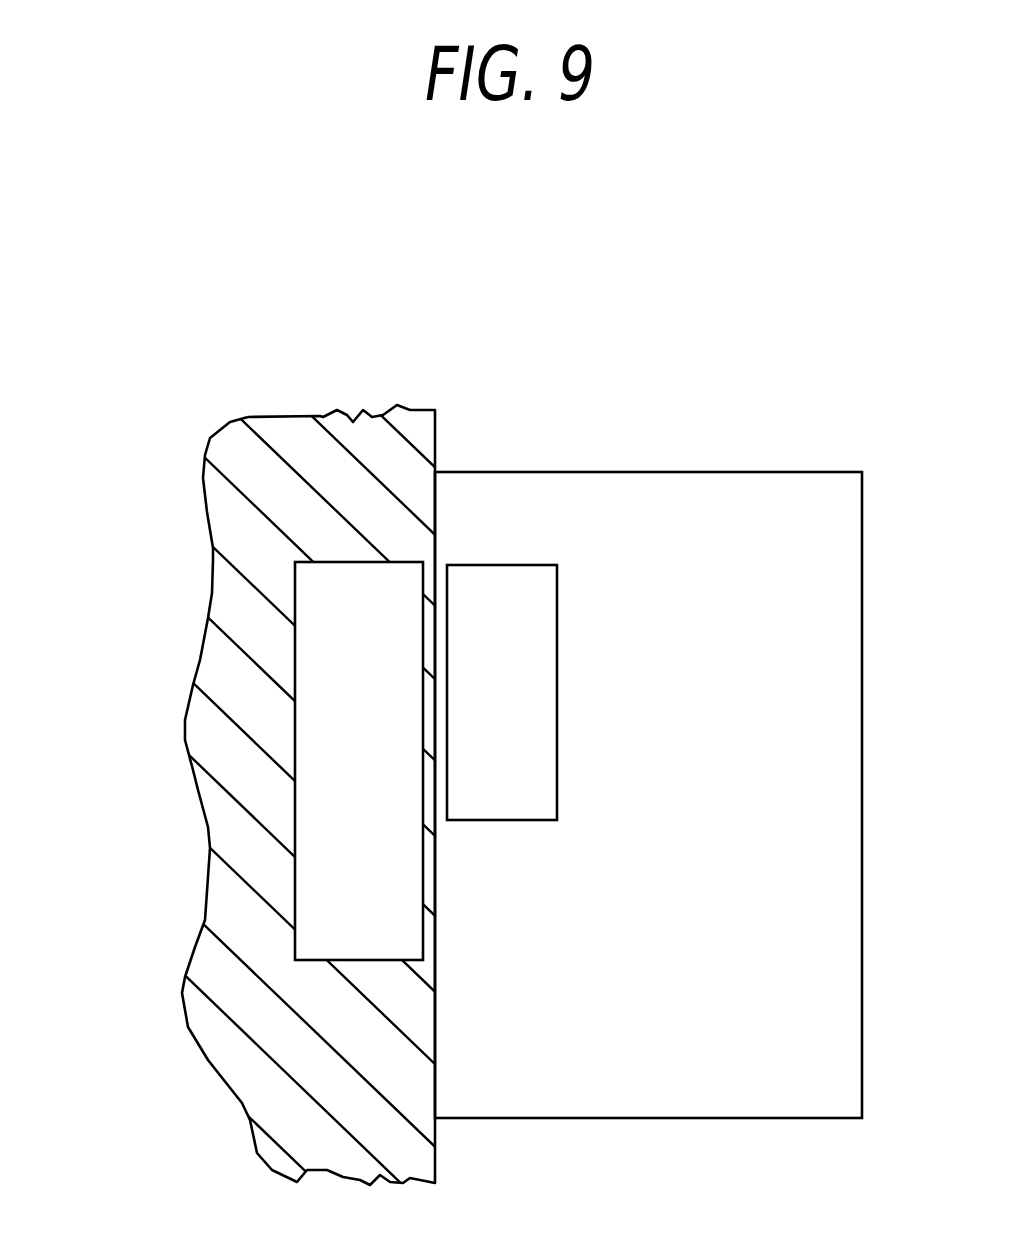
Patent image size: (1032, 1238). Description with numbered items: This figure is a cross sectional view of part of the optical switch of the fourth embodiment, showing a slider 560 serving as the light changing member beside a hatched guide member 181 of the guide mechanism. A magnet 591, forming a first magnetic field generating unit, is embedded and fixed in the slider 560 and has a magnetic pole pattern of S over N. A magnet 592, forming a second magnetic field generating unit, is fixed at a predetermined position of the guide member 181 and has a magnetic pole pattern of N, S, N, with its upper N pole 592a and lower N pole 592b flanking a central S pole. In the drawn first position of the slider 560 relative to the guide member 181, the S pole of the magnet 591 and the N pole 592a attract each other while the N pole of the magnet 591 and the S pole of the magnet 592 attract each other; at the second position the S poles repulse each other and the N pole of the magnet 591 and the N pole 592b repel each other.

The guide member 181 is at (352, 415).
The slider 560 is at (730, 498).
The magnet 591 is at (505, 575).
The magnet 592 is at (328, 680).
The N pole 592a is at (360, 593).
The N pole 592b is at (357, 937).